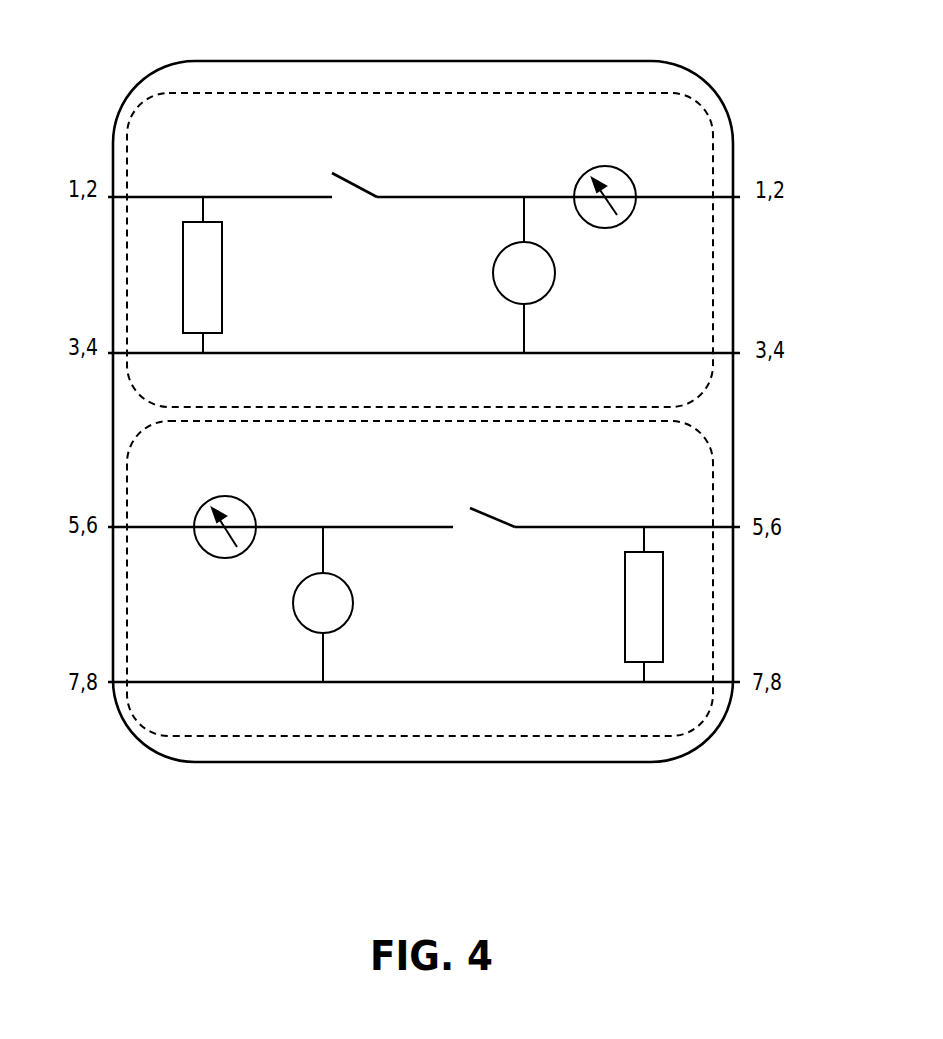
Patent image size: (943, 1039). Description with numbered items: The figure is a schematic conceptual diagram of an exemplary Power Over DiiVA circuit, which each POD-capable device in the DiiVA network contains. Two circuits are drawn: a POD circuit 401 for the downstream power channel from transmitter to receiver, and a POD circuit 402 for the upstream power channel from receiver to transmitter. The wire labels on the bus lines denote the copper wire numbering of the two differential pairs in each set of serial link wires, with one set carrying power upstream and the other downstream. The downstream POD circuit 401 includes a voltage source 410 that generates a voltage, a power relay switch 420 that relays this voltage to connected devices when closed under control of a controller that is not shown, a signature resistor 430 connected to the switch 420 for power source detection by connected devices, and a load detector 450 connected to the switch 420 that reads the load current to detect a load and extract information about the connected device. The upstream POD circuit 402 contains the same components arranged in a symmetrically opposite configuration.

The POD circuit for downstream power channel 401 is at (137, 388).
The POD circuit for upstream power channel 402 is at (137, 720).
The voltage source 410 is at (555, 266).
The power relay switch 420 is at (368, 138).
The signature resistor 430 is at (183, 258).
The load detector 450 is at (630, 178).